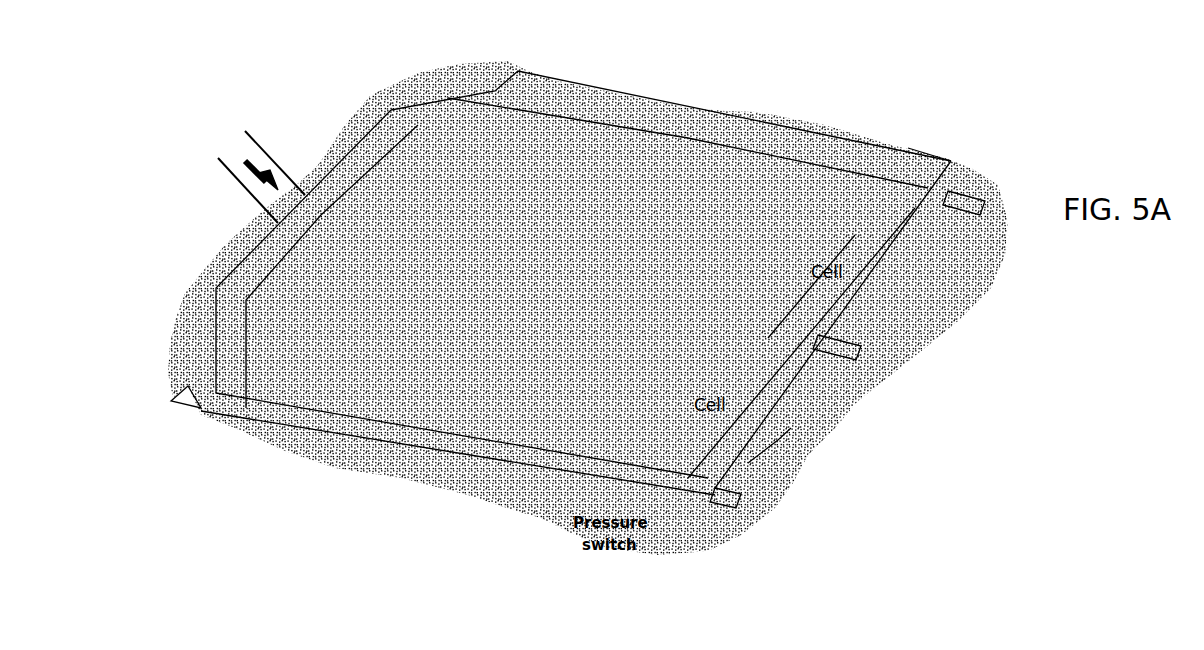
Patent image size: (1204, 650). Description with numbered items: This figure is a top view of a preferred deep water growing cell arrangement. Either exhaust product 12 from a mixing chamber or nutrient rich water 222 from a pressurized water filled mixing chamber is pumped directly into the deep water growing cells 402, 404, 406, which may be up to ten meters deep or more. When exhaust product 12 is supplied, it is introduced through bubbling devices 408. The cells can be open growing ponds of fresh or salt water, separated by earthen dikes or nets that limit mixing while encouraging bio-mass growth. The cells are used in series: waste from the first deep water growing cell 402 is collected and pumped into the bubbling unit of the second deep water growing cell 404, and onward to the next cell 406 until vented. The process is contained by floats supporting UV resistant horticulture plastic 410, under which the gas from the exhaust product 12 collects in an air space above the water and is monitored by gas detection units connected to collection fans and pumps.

The exhaust product 12 is at (284, 152).
The nutrient rich water 222 is at (273, 130).
The first deep water growing cell 402 is at (600, 175).
The second deep water growing cell 404 is at (847, 227).
The deep water growing cell 406 is at (783, 420).
The bubbling devices 408 is at (938, 187).
The UV resistant horticulture plastic 410 is at (930, 140).